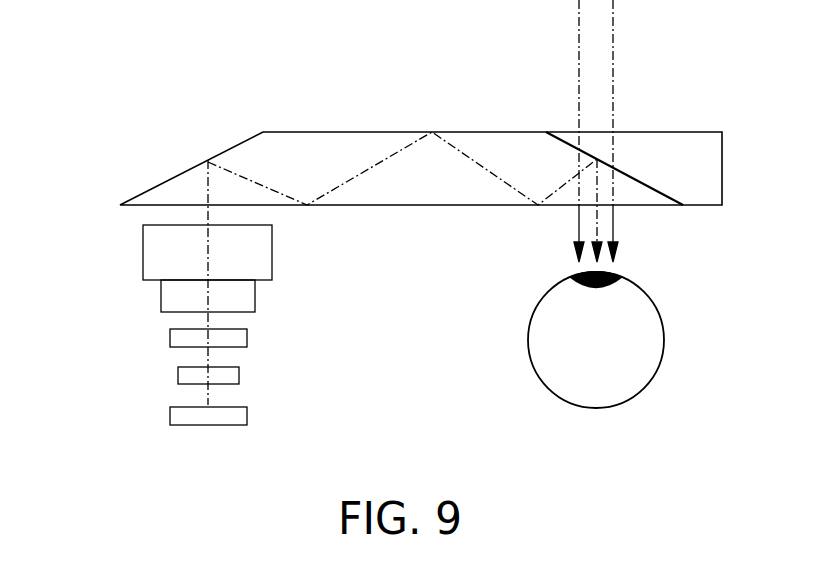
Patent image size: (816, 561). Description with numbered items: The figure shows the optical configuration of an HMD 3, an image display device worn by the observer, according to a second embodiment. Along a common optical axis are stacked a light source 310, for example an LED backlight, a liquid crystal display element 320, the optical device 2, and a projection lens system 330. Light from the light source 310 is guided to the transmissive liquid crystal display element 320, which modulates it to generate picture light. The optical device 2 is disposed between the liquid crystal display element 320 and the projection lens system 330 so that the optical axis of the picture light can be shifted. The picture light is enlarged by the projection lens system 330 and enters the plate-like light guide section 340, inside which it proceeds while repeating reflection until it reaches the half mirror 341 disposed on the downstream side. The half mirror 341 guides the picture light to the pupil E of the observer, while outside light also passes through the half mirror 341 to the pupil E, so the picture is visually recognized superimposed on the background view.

The HMD (image display device) 3 is at (243, 92).
The light guide section 340 is at (349, 132).
The half mirror 341 is at (643, 182).
The projection lens system 330 is at (143, 248).
The optical device 2 is at (170, 336).
The liquid crystal display element 320 is at (178, 375).
The light source 310 is at (170, 415).
The pupil of the observer E is at (578, 385).